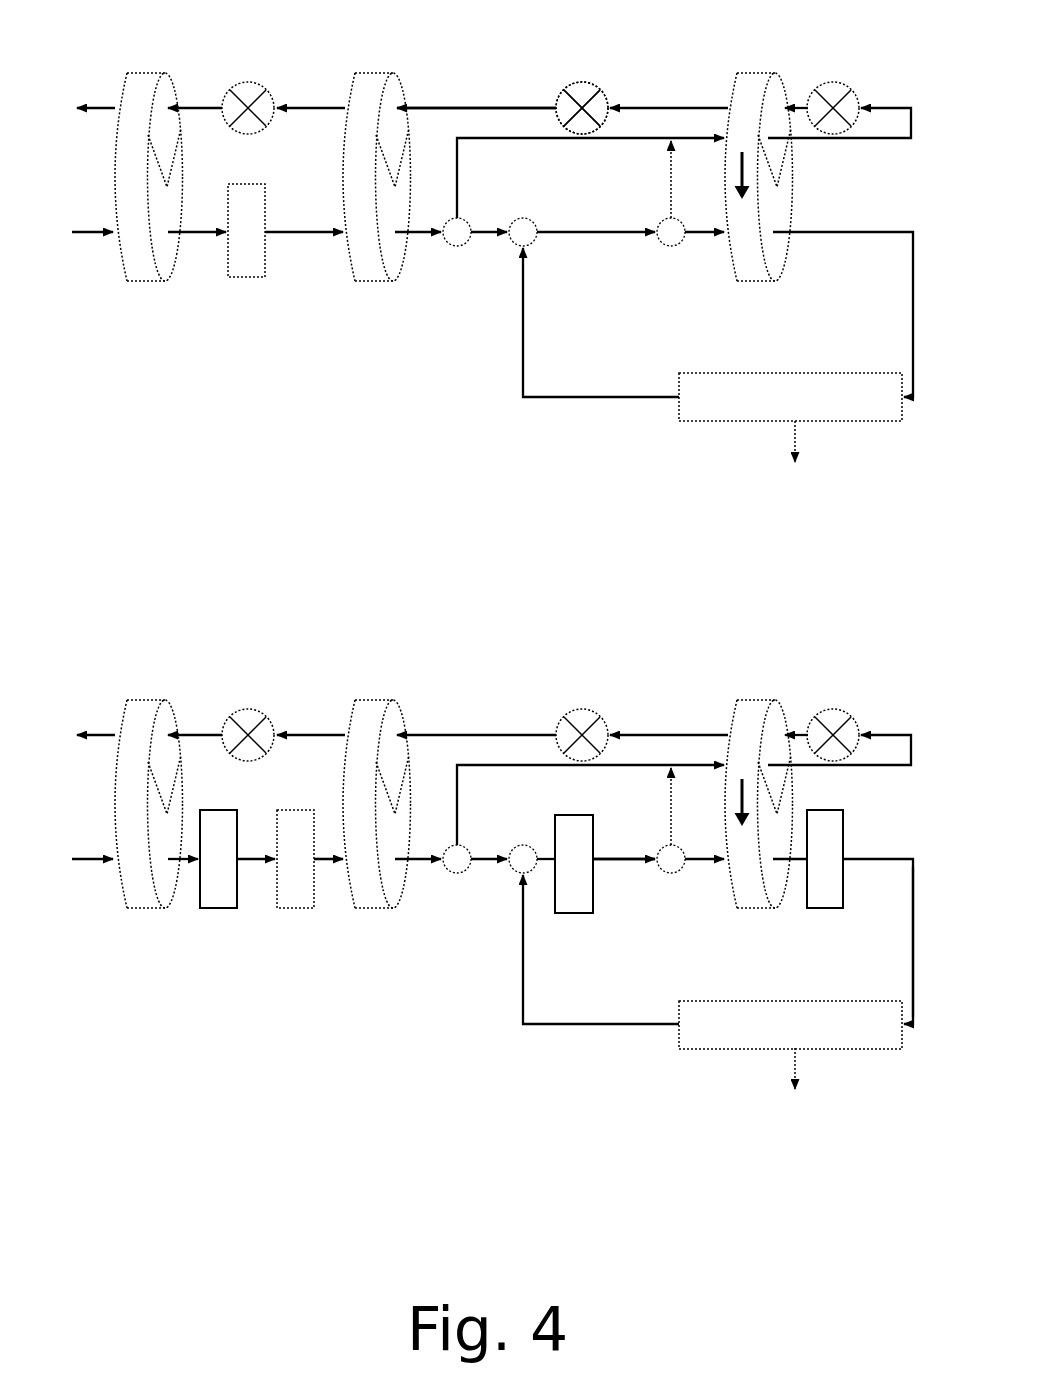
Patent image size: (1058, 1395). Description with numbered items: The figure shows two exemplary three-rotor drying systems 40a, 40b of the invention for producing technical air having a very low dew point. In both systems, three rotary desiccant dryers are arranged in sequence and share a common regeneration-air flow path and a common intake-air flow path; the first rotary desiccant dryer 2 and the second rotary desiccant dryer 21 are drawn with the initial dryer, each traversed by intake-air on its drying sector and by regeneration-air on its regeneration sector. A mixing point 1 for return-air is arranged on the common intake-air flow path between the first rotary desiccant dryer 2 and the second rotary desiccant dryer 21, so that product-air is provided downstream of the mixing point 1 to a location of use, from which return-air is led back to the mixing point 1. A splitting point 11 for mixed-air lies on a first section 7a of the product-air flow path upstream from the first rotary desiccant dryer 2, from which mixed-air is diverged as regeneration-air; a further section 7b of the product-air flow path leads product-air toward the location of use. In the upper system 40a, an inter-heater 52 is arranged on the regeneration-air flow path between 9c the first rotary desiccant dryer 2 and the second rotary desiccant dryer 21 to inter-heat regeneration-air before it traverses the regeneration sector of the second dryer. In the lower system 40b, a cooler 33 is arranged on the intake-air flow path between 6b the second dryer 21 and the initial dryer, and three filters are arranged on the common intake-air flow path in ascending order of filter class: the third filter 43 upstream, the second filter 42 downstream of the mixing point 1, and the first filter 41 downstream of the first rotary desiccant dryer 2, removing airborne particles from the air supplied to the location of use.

The 3-rotor drying system 40a is at (472, 247).
The 3-rotor drying system 40b is at (474, 866).
The regeneration-air flow path section between first and second rotary desiccant dry 9c is at (445, 106).
The inter-heater 52 is at (603, 90).
The second rotary desiccant dryer 21 is at (375, 286).
The first rotary desiccant dryer 2 is at (748, 289).
The filter 3 43 is at (194, 886).
The cooler 33 is at (271, 886).
The intake-air flow path section between second and initial rotary desiccant dryers 6b is at (333, 907).
The mixing point for return-air 1 is at (512, 827).
The filter 2 42 is at (604, 891).
The first section of the product-air flow path 7a is at (633, 890).
The splitting point for mixed-air 11 is at (698, 889).
The filter 1 41 is at (862, 847).
The section of the product-air flow path 7b is at (878, 942).